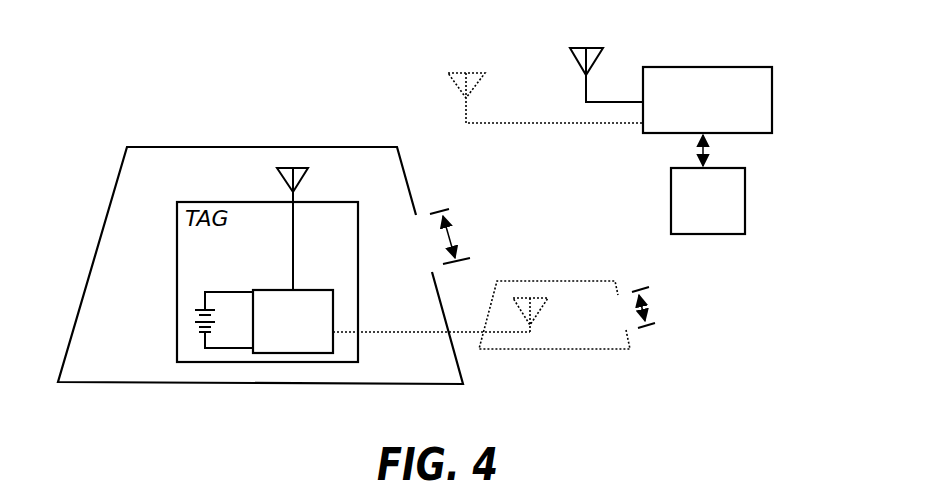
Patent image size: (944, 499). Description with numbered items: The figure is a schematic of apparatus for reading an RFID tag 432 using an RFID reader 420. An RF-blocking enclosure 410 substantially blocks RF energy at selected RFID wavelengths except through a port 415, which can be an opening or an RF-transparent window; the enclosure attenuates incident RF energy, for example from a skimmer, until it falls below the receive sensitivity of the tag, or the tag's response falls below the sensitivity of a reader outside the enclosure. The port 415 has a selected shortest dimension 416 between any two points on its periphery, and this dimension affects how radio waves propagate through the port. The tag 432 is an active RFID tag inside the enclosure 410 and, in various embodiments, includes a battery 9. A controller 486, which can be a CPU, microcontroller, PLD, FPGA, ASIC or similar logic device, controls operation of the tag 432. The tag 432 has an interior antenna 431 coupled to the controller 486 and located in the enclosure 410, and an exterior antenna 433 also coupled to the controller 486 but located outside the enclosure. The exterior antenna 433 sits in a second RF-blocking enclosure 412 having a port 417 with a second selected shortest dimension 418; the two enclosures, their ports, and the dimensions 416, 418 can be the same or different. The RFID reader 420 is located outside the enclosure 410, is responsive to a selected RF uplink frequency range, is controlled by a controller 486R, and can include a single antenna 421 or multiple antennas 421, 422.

The RF-blocking enclosure 410 is at (117, 180).
The second RF-blocking enclosure 412 is at (567, 350).
The port 415 is at (415, 267).
The selected shortest dimension 416 is at (459, 232).
The port 417 is at (643, 336).
The second selected shortest dimension 418 is at (649, 300).
The RFID reader 420 is at (668, 67).
The antenna 421 is at (570, 60).
The antenna 422 is at (448, 80).
The interior antenna 431 is at (308, 181).
The RFID tag 432 is at (177, 342).
The exterior antenna 433 is at (548, 305).
The controller 486 is at (263, 290).
The controller 486R is at (745, 201).
The battery 9 is at (193, 300).